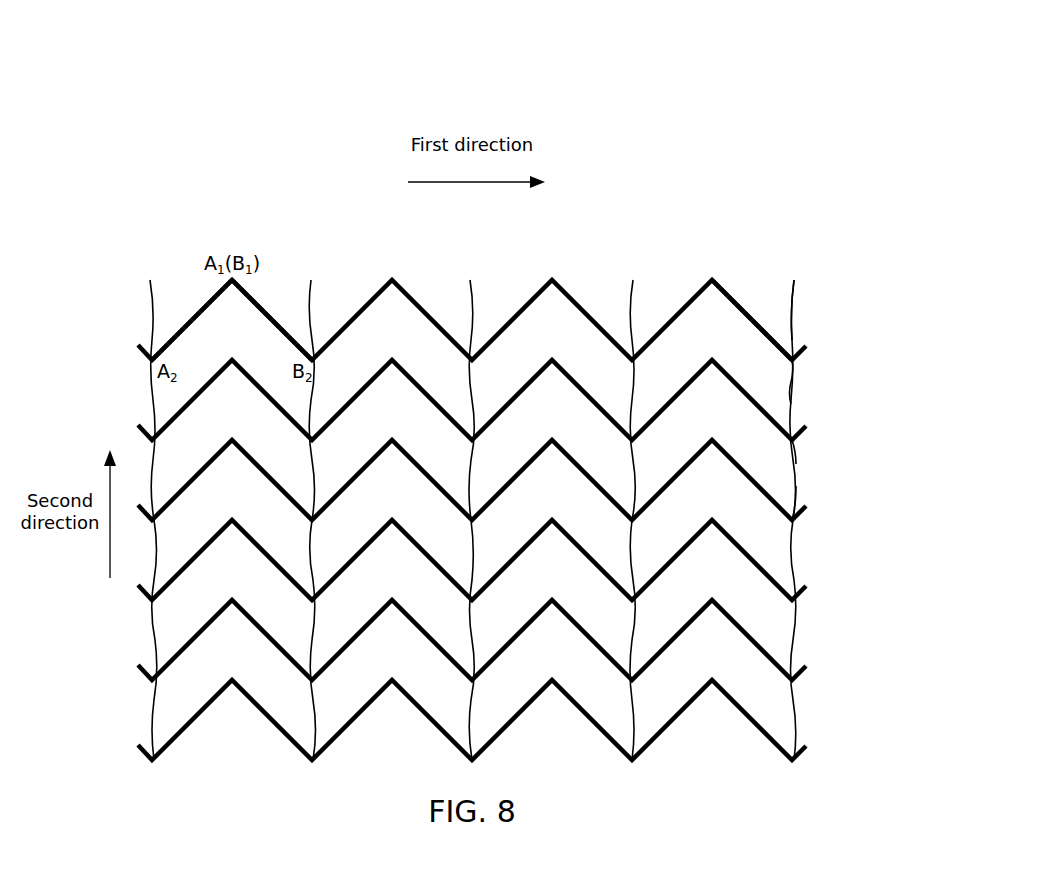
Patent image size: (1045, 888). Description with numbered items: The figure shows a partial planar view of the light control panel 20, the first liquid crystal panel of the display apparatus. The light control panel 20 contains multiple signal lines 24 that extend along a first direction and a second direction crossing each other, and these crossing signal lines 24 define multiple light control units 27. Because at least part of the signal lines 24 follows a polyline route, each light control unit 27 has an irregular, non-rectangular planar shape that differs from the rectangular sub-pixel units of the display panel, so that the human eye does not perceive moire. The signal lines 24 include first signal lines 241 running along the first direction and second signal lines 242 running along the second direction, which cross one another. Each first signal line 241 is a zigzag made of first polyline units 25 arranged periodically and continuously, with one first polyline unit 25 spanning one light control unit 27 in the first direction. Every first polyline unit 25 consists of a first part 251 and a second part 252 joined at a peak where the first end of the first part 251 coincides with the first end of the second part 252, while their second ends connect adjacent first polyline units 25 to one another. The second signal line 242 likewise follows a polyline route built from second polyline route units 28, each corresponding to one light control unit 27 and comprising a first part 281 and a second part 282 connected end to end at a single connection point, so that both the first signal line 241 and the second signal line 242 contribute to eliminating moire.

The light control panel 20 is at (694, 96).
The signal line 24 is at (750, 184).
The first signal line 241 is at (725, 308).
The second signal line 242 is at (795, 312).
The first polyline unit 25 is at (188, 184).
The first part 251 is at (193, 318).
The second part 252 is at (275, 322).
The light control unit 27 is at (770, 382).
The second polyline route unit 28 is at (893, 455).
The first part 281 is at (796, 464).
The second part 282 is at (797, 498).